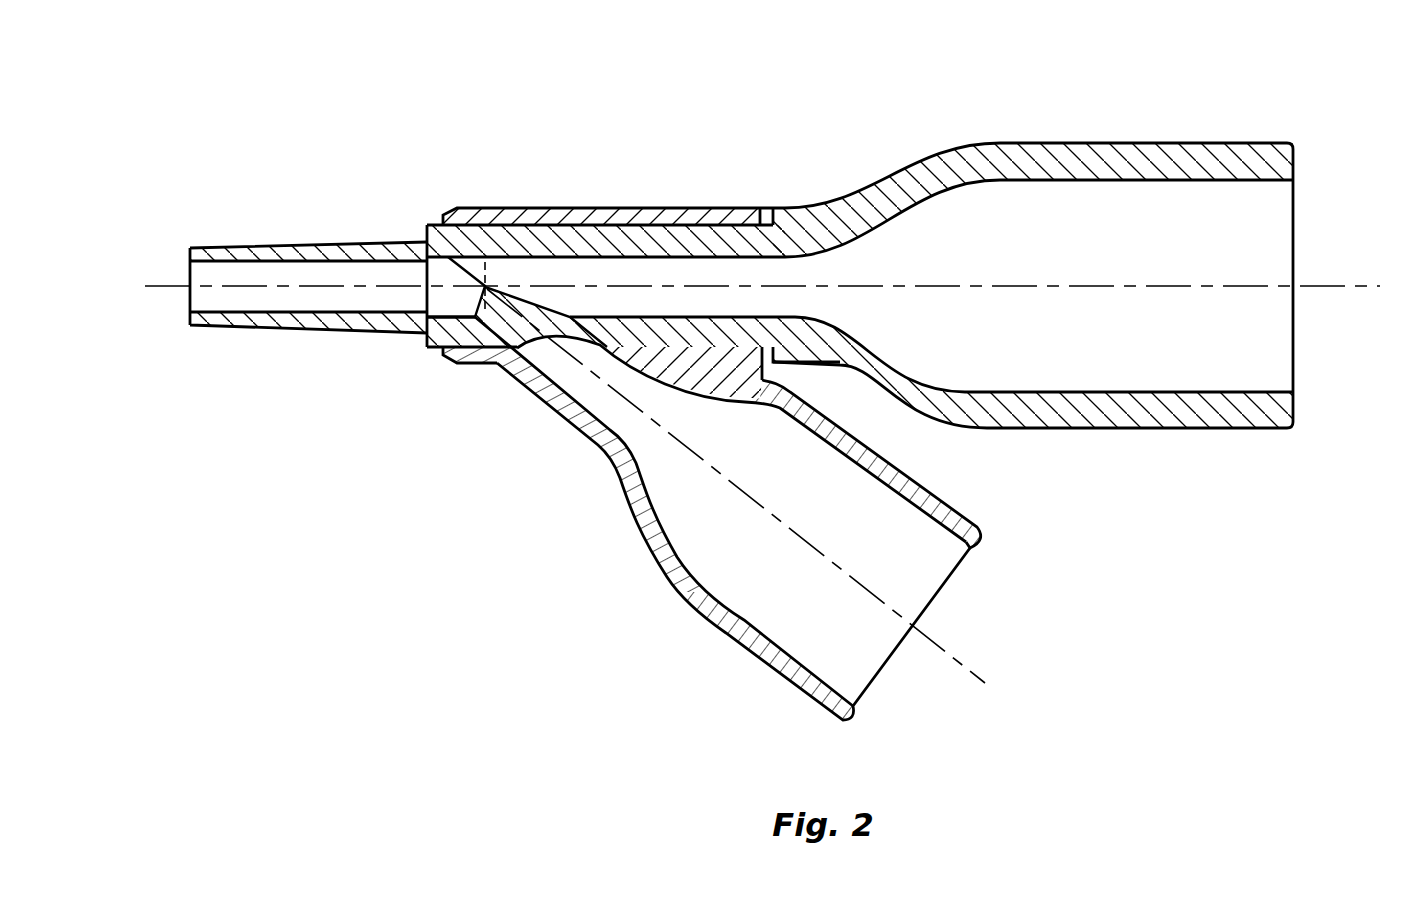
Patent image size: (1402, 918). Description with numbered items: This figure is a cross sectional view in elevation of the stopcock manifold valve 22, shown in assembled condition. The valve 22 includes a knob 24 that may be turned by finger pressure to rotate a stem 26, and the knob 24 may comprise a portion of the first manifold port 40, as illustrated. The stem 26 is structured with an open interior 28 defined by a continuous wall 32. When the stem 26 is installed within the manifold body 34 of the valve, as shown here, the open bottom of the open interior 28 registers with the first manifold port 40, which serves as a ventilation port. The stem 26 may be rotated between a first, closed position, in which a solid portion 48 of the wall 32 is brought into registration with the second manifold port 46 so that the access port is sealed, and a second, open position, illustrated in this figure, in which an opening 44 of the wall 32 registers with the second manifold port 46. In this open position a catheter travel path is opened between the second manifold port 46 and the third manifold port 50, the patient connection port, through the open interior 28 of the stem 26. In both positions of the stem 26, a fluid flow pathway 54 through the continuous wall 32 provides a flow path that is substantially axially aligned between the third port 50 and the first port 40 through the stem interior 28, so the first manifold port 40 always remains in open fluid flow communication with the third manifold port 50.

The stopcock manifold valve 22 is at (688, 171).
The knob 24 is at (935, 153).
The stem 26 is at (427, 226).
The open interior 28 is at (425, 331).
The continuous wall 32 is at (513, 223).
The manifold body 34 is at (733, 207).
The first manifold port 40 is at (1260, 360).
The opening 44 is at (560, 330).
The second manifold port 46 is at (857, 677).
The solid portion 48 is at (607, 280).
The third manifold port 50 is at (203, 297).
The fluid flow pathway 54 is at (810, 300).